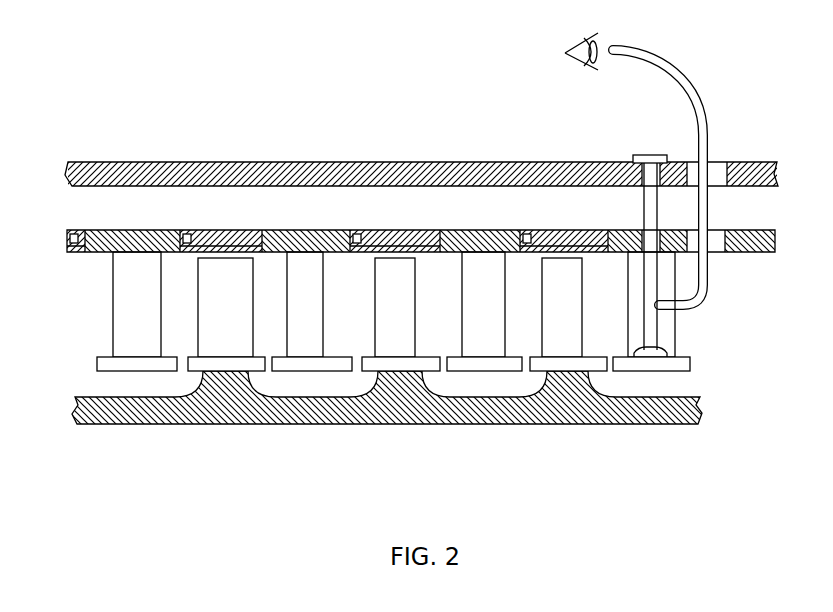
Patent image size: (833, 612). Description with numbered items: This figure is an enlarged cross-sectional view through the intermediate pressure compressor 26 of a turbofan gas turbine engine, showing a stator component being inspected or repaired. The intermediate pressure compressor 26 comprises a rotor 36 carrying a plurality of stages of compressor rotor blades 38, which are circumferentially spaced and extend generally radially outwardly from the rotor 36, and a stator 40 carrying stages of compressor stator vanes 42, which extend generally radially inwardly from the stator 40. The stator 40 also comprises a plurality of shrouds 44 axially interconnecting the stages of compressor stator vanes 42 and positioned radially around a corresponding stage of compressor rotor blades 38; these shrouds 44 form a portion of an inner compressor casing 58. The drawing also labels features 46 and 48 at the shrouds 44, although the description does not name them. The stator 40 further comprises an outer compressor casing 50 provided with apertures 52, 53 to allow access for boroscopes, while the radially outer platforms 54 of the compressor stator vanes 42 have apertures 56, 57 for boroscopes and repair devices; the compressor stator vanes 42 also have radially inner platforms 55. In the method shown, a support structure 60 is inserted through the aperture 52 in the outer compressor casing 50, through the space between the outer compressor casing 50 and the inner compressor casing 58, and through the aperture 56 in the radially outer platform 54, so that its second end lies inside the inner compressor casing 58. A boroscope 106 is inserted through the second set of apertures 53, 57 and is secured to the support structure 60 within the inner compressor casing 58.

The intermediate pressure compressor 26 is at (432, 146).
The rotor 36 is at (410, 414).
The compressor rotor blades 38 is at (232, 342).
The stator 40 is at (368, 150).
The compressor stator vanes 42 is at (118, 313).
The shrouds 44 is at (233, 231).
The locating pin 46 is at (192, 236).
The gap 48 is at (195, 253).
The outer compressor casing 50 is at (541, 163).
The aperture 52 is at (641, 177).
The aperture 53 is at (738, 164).
The radially outer platform 54 is at (778, 236).
The radially inner platforms 55 is at (506, 364).
The aperture 56 is at (665, 246).
The aperture 57 is at (720, 254).
The inner compressor casing 58 is at (211, 219).
The support structure 60 is at (645, 156).
The boroscope 106 is at (657, 49).